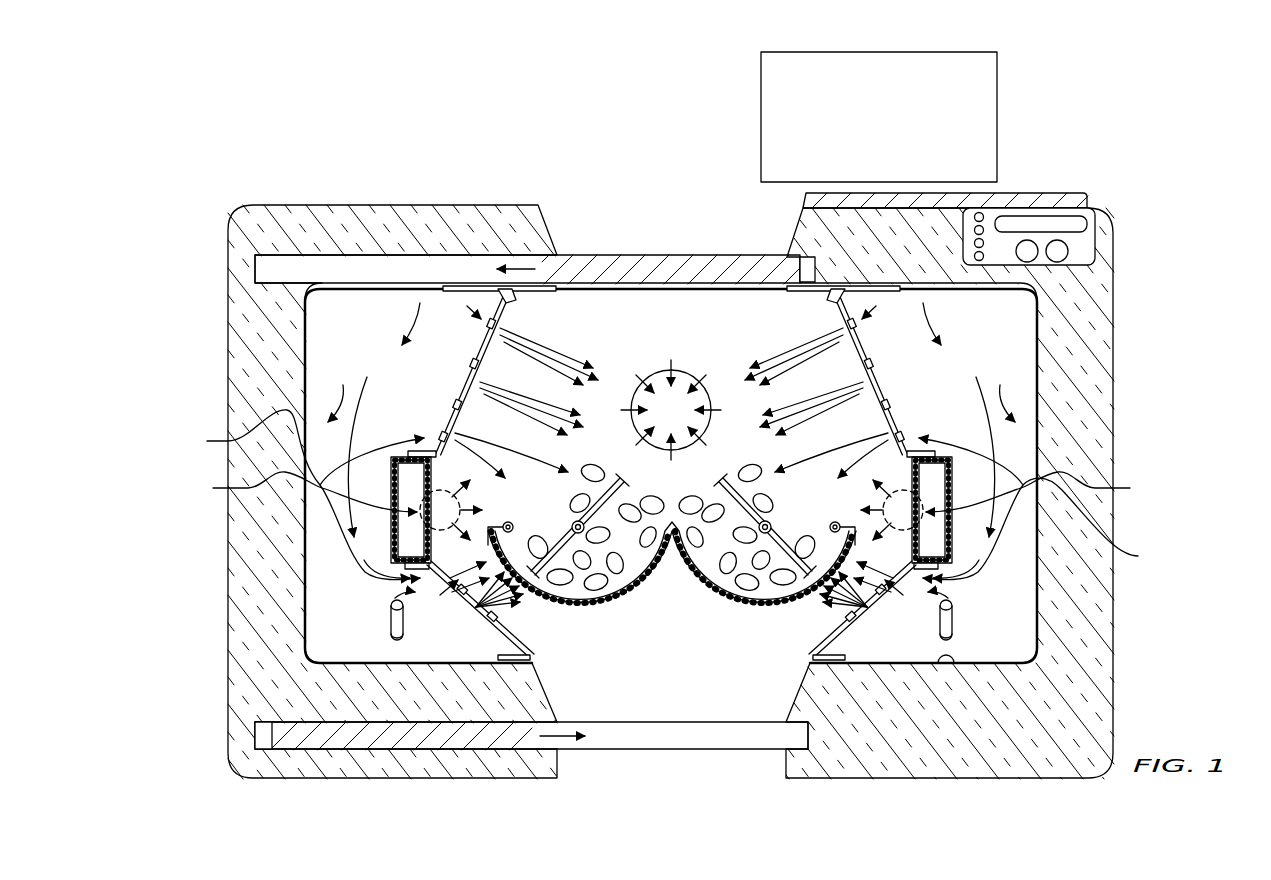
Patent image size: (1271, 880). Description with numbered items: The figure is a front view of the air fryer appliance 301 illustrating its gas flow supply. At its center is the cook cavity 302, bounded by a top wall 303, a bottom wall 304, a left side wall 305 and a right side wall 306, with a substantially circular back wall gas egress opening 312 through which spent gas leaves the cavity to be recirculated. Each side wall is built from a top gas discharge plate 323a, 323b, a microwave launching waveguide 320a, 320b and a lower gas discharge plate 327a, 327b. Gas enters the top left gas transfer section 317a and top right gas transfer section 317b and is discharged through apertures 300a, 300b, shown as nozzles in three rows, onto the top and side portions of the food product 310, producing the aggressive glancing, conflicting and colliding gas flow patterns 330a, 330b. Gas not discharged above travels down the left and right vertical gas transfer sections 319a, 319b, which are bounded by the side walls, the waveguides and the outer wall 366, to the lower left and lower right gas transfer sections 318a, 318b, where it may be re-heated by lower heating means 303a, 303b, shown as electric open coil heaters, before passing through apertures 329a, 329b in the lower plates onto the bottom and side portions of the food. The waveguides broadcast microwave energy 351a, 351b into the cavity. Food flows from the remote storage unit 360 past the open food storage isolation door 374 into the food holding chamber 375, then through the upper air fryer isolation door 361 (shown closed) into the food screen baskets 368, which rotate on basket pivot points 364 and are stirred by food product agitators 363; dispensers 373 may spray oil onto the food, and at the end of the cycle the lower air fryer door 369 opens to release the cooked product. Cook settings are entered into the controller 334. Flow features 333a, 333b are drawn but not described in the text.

The appliance 301 is at (338, 145).
The cook cavity 302 is at (690, 321).
The top wall 303 is at (885, 275).
The bottom wall 304 is at (945, 665).
The left side wall 305 is at (296, 492).
The right side wall 306 is at (1044, 492).
The food product 310 is at (705, 545).
The back wall gas egress opening 312 is at (650, 382).
The left gas transfer section 317a is at (465, 348).
The top right gas transfer section 317b is at (920, 348).
The lower left gas transfer section 318a is at (363, 608).
The lower right gas transfer section 318b is at (1018, 610).
The left vertical gas transfer section 319a is at (342, 450).
The right vertical gas transfer section 319b is at (1002, 450).
The left side microwave launching waveguide 320a is at (428, 458).
The right side microwave launching waveguide 320b is at (918, 458).
The top left gas discharge plate 323a is at (480, 383).
The top right gas discharge plate 323b is at (863, 383).
The lower left gas discharge plate 327a is at (500, 645).
The lower right gas discharge plate 327b is at (842, 645).
The apertures 329a is at (470, 608).
The apertures 329b is at (873, 608).
The top glancing, conflicting and colliding gas flow pattern 330a is at (540, 342).
The right top glancing, conflicting and colliding gas flow pattern 330b is at (803, 342).
The left side spray 333a is at (505, 600).
The right side spray 333b is at (838, 600).
The controller 334 is at (1113, 250).
The microwave energy 351a is at (490, 455).
The microwave energy 351b is at (853, 455).
The remote storage unit 360 is at (897, 141).
The upper air fryer isolation door 361 is at (700, 255).
The food product agitators 363 is at (618, 478).
The basket pivot points 364 is at (508, 522).
The outer wall 366 is at (670, 495).
The food screen baskets 368 is at (635, 575).
The lower air fryer door 369 is at (255, 740).
The dispensers 373 is at (522, 297).
The food storage isolation door 374 is at (1083, 193).
The food holding chamber 375 is at (612, 223).
The apertures 300a is at (465, 385).
The apertures 300b is at (878, 385).
The lower left heating means 303a is at (390, 625).
The lower right gas heating means 303b is at (953, 625).